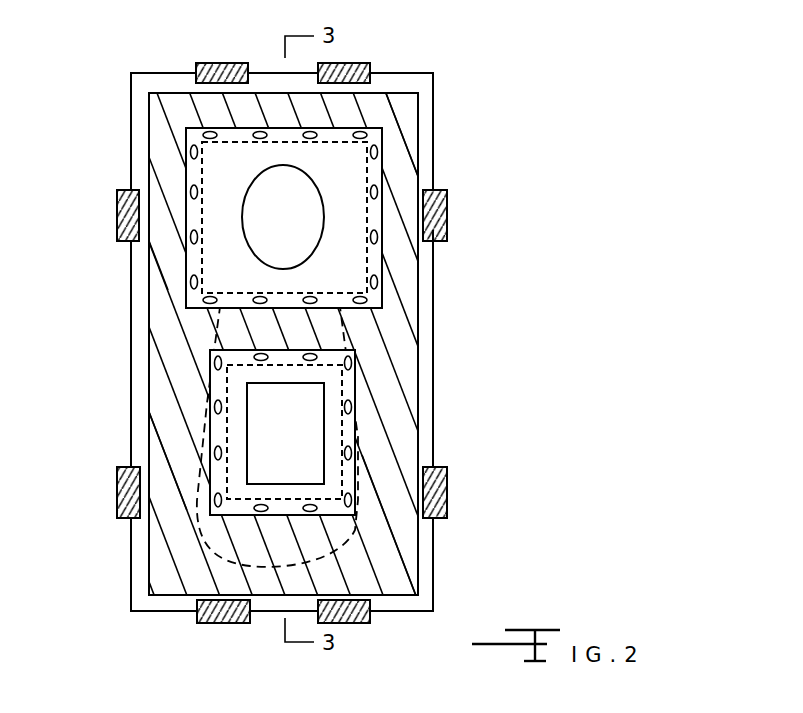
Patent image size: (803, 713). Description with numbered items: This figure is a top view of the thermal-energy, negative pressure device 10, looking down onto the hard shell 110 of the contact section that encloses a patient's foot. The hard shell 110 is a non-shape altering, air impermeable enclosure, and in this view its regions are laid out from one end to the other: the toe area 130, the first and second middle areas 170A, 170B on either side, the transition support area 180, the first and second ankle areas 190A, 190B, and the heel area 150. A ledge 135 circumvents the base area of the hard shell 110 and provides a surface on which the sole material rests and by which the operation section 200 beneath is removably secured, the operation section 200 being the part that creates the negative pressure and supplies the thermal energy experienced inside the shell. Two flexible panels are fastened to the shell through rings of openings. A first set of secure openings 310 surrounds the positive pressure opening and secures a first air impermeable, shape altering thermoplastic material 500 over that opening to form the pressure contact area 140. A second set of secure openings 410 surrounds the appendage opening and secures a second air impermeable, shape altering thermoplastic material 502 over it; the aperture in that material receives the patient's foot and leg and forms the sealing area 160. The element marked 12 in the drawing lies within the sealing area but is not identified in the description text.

The thermal-energy, negative pressure device 10 is at (540, 135).
The component / sensor window 12 is at (299, 223).
The hard shell 110 is at (380, 578).
The toe area 130 is at (440, 518).
The ledge 135 is at (435, 266).
The pressure contact area 140 is at (348, 391).
The heel area 150 is at (377, 88).
The sealing area 160 is at (377, 130).
The first middle area 170A is at (398, 438).
The second middle area 170B is at (170, 422).
The transition support area 180 is at (440, 295).
The first ankle area 190A is at (395, 163).
The second ankle area 190B is at (162, 145).
The operation section 200 is at (177, 587).
The first set of secure openings 310 is at (215, 502).
The second set of secure openings 410 is at (304, 130).
The first air impermeable, shape altering thermoplastic material 500 is at (278, 417).
The second air impermeable, shape altering thermoplastic material 502 is at (225, 167).